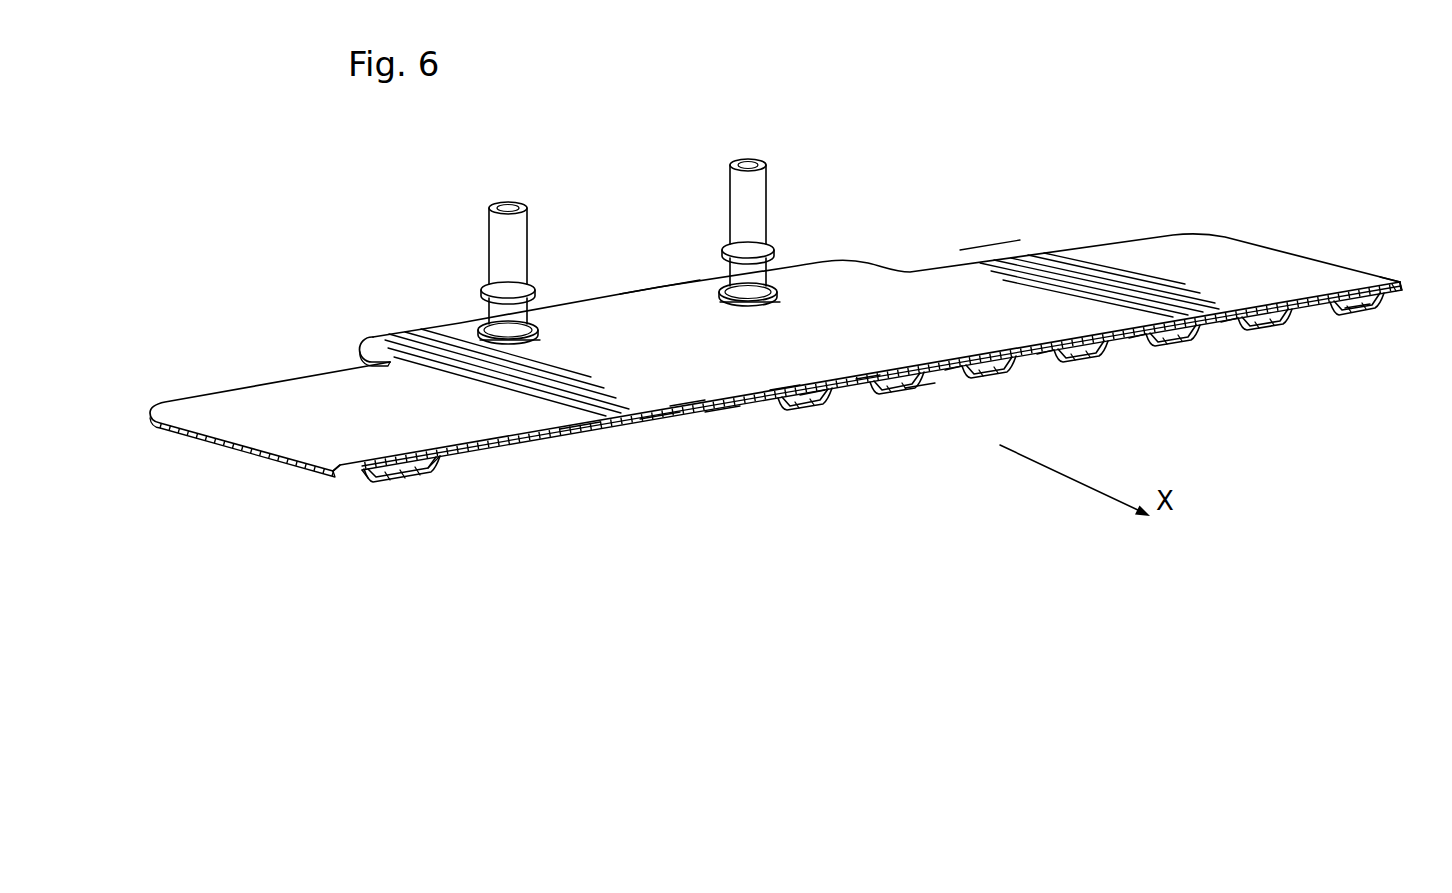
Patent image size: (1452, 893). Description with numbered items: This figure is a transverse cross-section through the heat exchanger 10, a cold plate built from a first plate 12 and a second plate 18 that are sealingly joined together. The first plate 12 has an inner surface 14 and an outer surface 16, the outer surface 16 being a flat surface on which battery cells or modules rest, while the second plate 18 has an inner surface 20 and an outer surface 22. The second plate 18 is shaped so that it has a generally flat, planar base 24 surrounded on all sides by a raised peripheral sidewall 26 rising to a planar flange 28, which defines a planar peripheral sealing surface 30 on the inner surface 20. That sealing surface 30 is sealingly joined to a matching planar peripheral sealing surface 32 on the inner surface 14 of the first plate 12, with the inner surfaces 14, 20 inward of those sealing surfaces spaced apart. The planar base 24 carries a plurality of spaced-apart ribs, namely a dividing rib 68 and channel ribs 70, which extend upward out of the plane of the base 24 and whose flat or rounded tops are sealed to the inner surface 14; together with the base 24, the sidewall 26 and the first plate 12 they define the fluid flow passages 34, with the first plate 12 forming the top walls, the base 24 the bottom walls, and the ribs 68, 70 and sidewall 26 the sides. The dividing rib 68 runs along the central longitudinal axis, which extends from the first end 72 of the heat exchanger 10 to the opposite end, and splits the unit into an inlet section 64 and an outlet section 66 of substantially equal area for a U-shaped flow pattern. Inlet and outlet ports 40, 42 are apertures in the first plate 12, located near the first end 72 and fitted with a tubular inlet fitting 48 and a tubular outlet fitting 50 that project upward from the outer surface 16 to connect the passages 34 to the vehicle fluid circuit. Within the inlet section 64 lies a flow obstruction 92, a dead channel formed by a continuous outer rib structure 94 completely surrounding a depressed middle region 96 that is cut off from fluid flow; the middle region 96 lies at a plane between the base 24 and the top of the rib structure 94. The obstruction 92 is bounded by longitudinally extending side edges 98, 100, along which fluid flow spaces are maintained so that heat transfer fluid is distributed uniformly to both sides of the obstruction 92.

The heat exchanger 10 is at (990, 222).
The first plate 12 is at (285, 403).
The inner surface 14 is at (457, 450).
The outer surface 16 is at (420, 355).
The second plate 18 is at (350, 473).
The inner surface 20 is at (553, 425).
The outer surface 22 is at (582, 432).
The planar base 24 is at (925, 385).
The peripheral sidewall 26 is at (1365, 312).
The planar flange 28 is at (1398, 290).
The planar peripheral sealing surface 30 is at (1390, 280).
The planar peripheral sealing surface 32 is at (360, 478).
The fluid flow passages 34 is at (900, 395).
The inlet port 40 is at (530, 343).
The outlet port 42 is at (760, 303).
The tubular inlet fitting 48 is at (522, 233).
The tubular outlet fitting 50 is at (766, 188).
The inlet section 64 is at (662, 420).
The outlet section 66 is at (1095, 262).
The dividing rib 68 is at (868, 378).
The channel ribs 70 is at (1053, 343).
The first end 72 is at (658, 282).
The flow obstruction 92 is at (725, 415).
The continuous outer rib structure 94 is at (790, 383).
The depressed middle region 96 is at (690, 398).
The side edge 98 is at (436, 448).
The side edge 100 is at (812, 390).